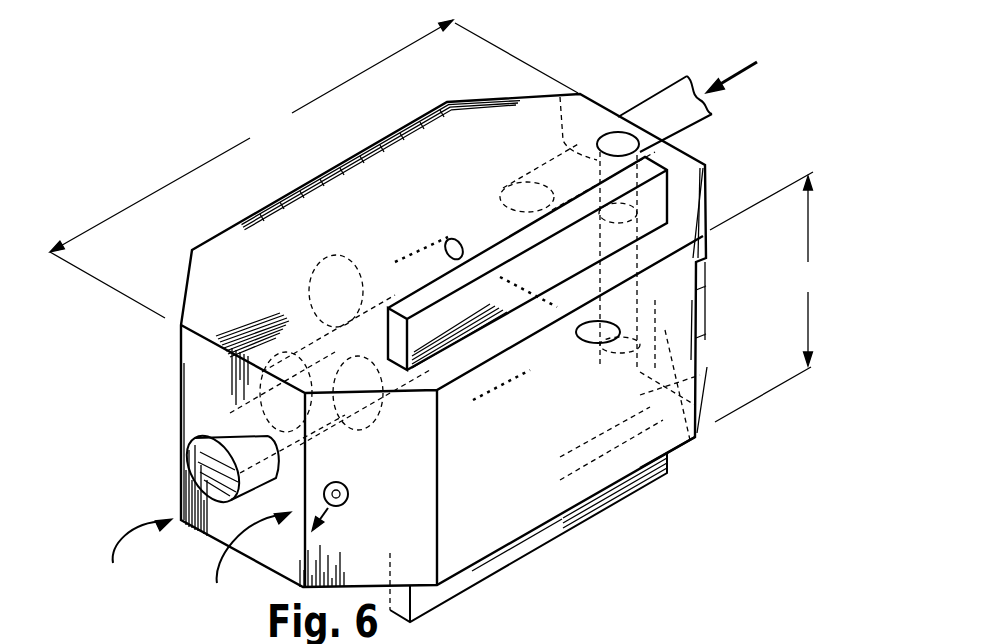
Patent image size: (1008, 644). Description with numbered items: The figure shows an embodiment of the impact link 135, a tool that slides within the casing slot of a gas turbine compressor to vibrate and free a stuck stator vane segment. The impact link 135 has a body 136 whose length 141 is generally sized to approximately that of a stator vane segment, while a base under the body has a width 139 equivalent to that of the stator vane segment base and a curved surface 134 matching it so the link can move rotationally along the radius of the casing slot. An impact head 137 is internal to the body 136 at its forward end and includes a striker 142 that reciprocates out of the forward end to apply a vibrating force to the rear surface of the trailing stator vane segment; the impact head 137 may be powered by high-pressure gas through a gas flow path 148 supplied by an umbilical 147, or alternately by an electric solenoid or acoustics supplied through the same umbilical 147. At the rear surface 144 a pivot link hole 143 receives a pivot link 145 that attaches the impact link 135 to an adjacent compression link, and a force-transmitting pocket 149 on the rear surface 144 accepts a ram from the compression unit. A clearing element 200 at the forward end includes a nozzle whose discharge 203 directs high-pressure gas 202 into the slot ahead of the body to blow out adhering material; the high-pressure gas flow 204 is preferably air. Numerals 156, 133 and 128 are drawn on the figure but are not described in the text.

The impact link 135 is at (167, 132).
The body 136 is at (270, 206).
The length 141 is at (265, 128).
The width 139 is at (820, 272).
The rear surface 144 is at (716, 170).
The end face chamfer 156 is at (720, 242).
The umbilical 147 is at (662, 100).
The gas flow path 148 is at (706, 93).
The pivot link hole 143 is at (560, 97).
The impact head 137 is at (300, 318).
The high-pressure gas flow 204 is at (537, 260).
The pivot link 145 is at (513, 240).
The curved surface 134 is at (590, 520).
The striker 142 is at (200, 456).
The force-transmitting pocket 149 is at (685, 437).
The bottom edge 133 is at (680, 448).
The high-pressure gas 202 is at (348, 488).
The discharge 203 is at (325, 522).
The insertion direction 128 is at (131, 554).
The clearing element 200 is at (247, 561).